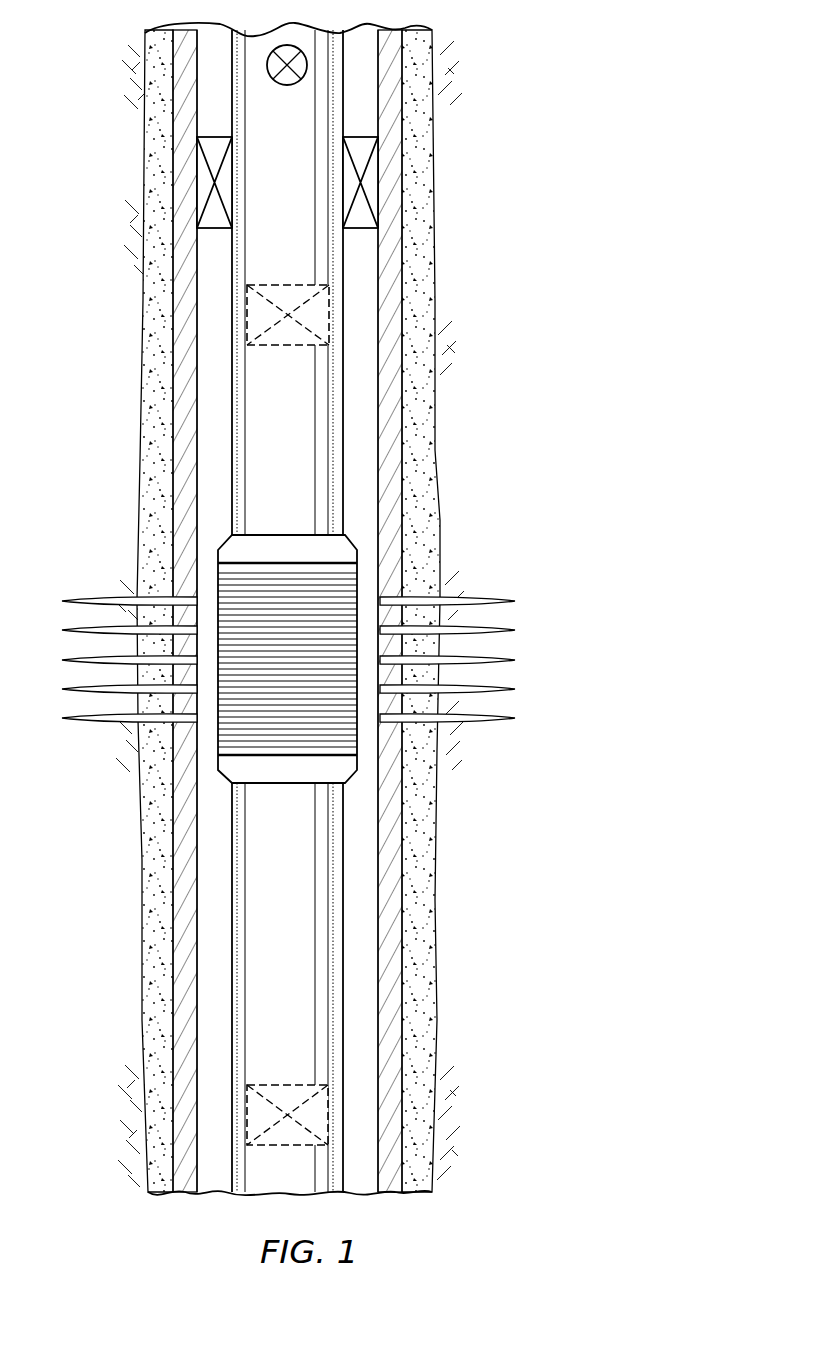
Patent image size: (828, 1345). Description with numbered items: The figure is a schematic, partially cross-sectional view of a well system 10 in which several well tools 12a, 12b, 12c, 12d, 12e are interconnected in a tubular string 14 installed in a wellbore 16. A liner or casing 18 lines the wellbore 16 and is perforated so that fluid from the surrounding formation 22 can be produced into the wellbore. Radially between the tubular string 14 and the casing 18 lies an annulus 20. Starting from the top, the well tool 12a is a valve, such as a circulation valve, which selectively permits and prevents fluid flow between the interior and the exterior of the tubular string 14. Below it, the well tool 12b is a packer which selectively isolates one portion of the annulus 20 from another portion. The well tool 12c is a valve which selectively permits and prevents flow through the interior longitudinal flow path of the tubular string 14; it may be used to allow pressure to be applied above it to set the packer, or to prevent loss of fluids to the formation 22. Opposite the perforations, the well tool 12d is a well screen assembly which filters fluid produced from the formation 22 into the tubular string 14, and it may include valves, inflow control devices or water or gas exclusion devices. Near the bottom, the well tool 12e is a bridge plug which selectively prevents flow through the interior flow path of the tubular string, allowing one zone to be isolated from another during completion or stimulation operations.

The well system 10 is at (593, 67).
The well tool 12a is at (267, 65).
The well tool 12b is at (380, 163).
The well tool 12c is at (247, 300).
The well tool 12d is at (357, 553).
The well tool 12e is at (262, 1083).
The tubular string 14 is at (348, 874).
The wellbore 16 is at (143, 940).
The casing 18 is at (403, 265).
The annulus 20 is at (215, 415).
The formation 22 is at (510, 645).